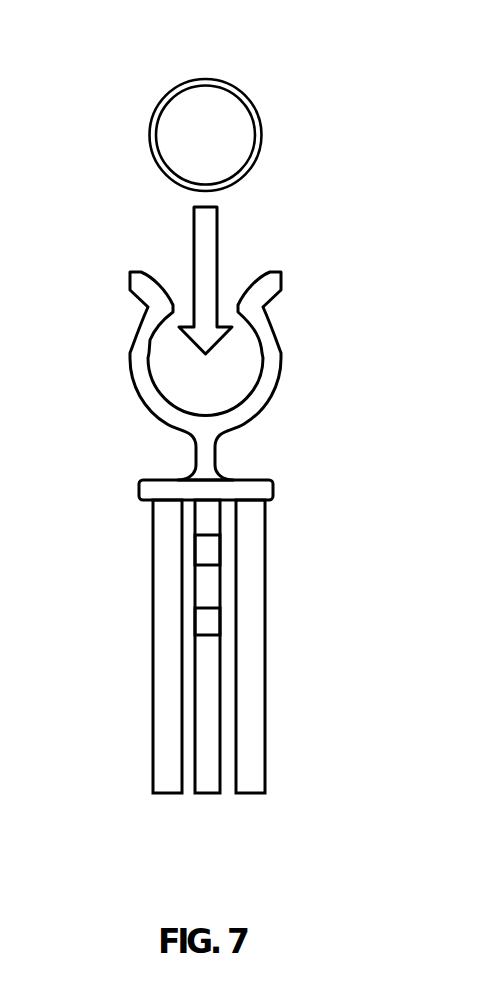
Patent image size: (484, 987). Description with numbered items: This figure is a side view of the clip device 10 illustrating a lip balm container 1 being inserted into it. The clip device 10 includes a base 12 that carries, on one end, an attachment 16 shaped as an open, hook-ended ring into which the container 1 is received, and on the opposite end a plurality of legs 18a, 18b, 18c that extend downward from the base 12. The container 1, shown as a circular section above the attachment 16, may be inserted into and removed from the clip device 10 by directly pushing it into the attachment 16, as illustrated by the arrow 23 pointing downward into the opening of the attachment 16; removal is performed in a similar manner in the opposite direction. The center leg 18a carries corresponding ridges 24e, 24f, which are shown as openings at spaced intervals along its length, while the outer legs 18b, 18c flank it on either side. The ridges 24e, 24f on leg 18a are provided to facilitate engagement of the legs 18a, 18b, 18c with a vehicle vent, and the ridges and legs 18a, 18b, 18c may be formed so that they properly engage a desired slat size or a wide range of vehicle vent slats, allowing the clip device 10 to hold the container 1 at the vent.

The container 1 is at (253, 98).
The clip device 10 is at (210, 576).
The base 12 is at (273, 488).
The attachment 16 is at (272, 317).
The leg 18a is at (288, 690).
The leg 18b is at (167, 795).
The leg 18c is at (248, 795).
The arrow 23 is at (217, 245).
The ridge 24e is at (205, 565).
The ridge 24f is at (205, 635).